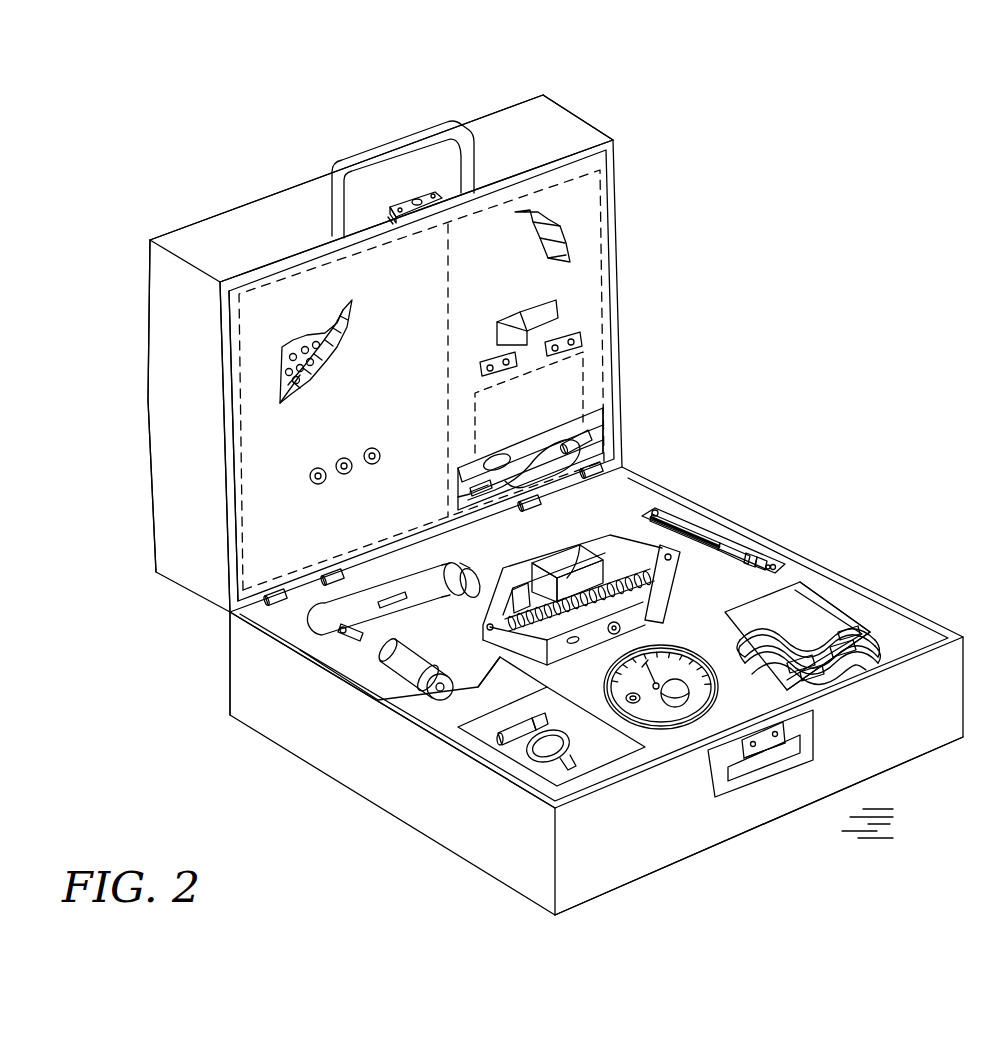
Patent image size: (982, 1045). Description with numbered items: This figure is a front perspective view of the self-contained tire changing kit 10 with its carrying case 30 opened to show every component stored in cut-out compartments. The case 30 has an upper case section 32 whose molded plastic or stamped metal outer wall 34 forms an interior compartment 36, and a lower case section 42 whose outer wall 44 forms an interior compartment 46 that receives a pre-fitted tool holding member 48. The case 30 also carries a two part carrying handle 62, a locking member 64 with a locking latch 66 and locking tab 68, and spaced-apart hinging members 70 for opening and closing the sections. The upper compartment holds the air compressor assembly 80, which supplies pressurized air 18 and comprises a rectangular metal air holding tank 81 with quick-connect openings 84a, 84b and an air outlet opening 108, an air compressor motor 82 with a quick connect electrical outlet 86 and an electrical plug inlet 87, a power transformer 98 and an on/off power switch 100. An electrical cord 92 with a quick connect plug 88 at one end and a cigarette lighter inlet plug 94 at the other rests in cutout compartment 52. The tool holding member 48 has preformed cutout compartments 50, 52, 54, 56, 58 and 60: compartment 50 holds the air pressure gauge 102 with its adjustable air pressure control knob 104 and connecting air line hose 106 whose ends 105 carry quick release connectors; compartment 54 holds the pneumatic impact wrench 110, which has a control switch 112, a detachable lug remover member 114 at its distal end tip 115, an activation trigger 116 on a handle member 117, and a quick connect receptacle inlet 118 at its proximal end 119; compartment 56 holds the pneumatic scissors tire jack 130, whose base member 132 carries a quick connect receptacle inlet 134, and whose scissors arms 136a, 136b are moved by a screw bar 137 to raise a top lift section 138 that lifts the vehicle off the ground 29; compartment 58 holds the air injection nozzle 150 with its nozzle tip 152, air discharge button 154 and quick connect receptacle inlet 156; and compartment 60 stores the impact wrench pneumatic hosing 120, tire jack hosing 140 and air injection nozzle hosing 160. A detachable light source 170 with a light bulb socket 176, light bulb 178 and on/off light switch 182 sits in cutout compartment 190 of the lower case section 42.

The self-contained tire changing kit 10 is at (302, 158).
The pressurized air 18 is at (300, 350).
The ground 29 is at (850, 812).
The carrying case 30 is at (618, 162).
The upper case section 32 is at (575, 136).
The outer wall 34 is at (178, 242).
The interior compartment 36 is at (225, 345).
The lower case section 42 is at (418, 798).
The outer wall 44 is at (500, 850).
The interior compartment 46 is at (256, 638).
The tool holding member 48 is at (232, 712).
The cutout compartment 50 is at (724, 684).
The cutout compartment 52 is at (533, 695).
The cutout compartment 54 is at (317, 610).
The cutout compartment 56 is at (620, 540).
The cutout compartment 58 is at (782, 558).
The cutout compartment 60 is at (860, 612).
The carrying handle 62 is at (387, 147).
The locking member 64 is at (392, 218).
The locking latch 66 is at (400, 207).
The locking tab 68 is at (767, 748).
The hinging member 70 is at (326, 568).
The air compressor assembly 80 is at (270, 310).
The pressurized air holding tank 81 is at (300, 374).
The air compressor motor 82 is at (548, 230).
The quick-connect opening 84a is at (376, 447).
The quick-connect opening 84b is at (342, 457).
The quick connect electrical outlet 86 is at (575, 338).
The electrical plug inlet 87 is at (496, 360).
The electrical quick connect plug 88 is at (572, 768).
The electrical cord 92 is at (553, 776).
The cigarette lighter inlet plug 94 is at (510, 730).
The power transformer 98 is at (470, 401).
The on/off power switch 100 is at (520, 316).
The air pressure gauge 102 is at (657, 710).
The adjustable air pressure control knob 104 is at (676, 700).
The end of connecting air line hose 105 is at (634, 702).
The connecting air line hose 106 is at (877, 656).
The air outlet opening 108 is at (311, 472).
The pneumatic impact wrench 110 is at (396, 670).
The control switch 112 is at (343, 636).
The detachable lug remover member 114 is at (480, 572).
The distal end tip 115 is at (448, 563).
The activation trigger 116 is at (412, 650).
The handle member 117 is at (417, 697).
The quick connect receptacle inlet 118 is at (443, 707).
The proximal end 119 is at (440, 700).
The impact wrench pneumatic hosing 120 is at (766, 600).
The pneumatic scissors tire jack 130 is at (563, 652).
The base member 132 is at (636, 626).
The quick connect receptacle inlet 134 is at (676, 575).
The expandable scissors arm 136a is at (660, 512).
The expandable scissors arm 136b is at (487, 629).
The screw bar 137 is at (590, 531).
The top lift section 138 is at (566, 545).
The tire jack hosing 140 is at (830, 605).
The air injection nozzle 150 is at (700, 512).
The air injection nozzle tip 152 is at (702, 520).
The air discharge button 154 is at (750, 552).
The quick connect receptacle inlet 156 is at (765, 558).
The air injection nozzle hosing 160 is at (870, 618).
The detachable light source 170 is at (484, 473).
The light bulb socket 176 is at (500, 452).
The light bulb 178 is at (580, 418).
The on/off light switch 182 is at (548, 448).
The cutout compartment 190 is at (600, 440).